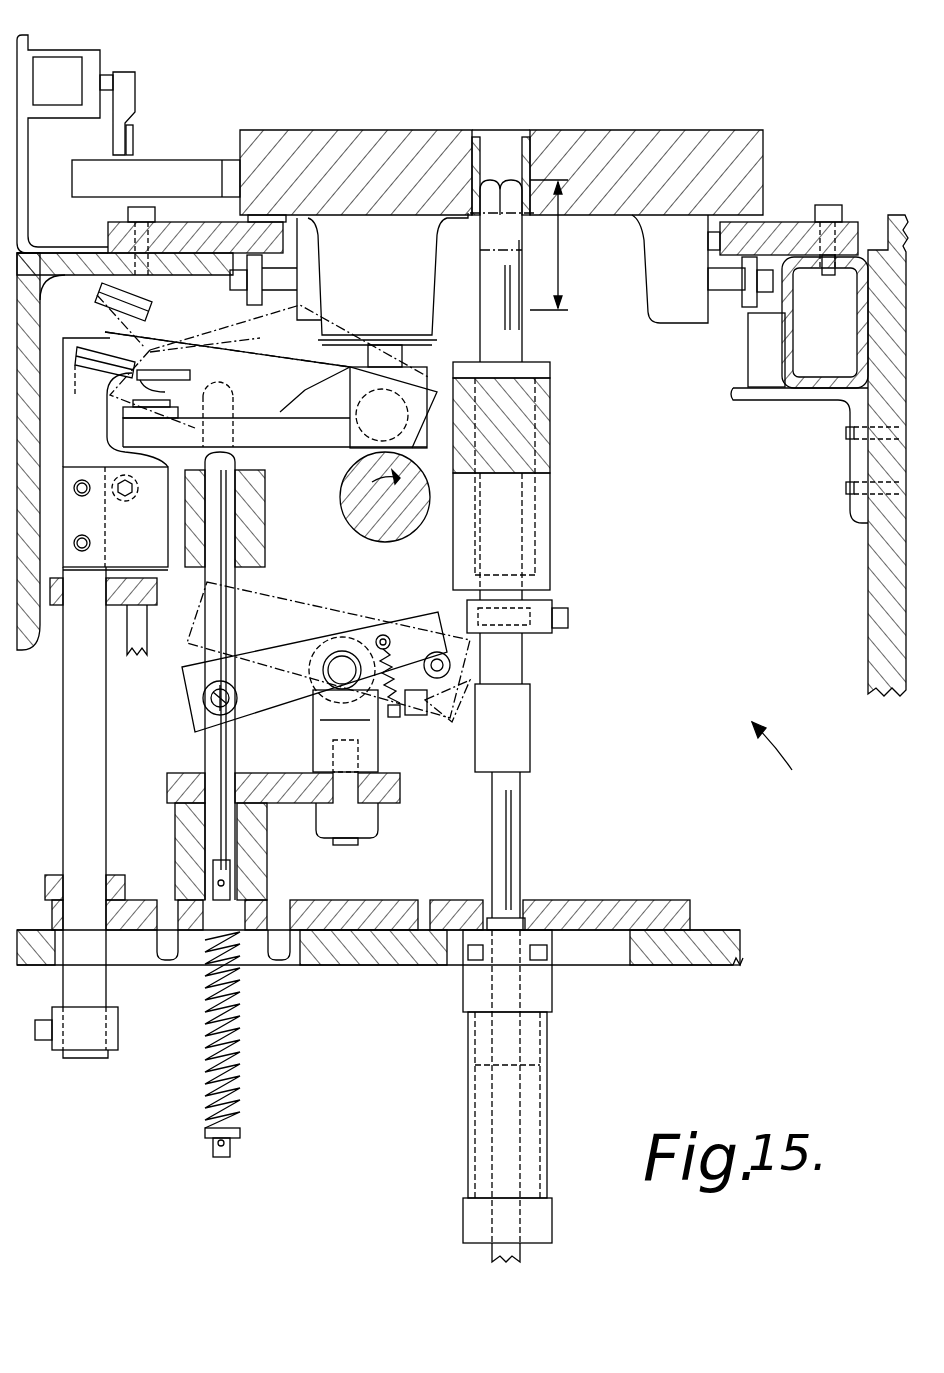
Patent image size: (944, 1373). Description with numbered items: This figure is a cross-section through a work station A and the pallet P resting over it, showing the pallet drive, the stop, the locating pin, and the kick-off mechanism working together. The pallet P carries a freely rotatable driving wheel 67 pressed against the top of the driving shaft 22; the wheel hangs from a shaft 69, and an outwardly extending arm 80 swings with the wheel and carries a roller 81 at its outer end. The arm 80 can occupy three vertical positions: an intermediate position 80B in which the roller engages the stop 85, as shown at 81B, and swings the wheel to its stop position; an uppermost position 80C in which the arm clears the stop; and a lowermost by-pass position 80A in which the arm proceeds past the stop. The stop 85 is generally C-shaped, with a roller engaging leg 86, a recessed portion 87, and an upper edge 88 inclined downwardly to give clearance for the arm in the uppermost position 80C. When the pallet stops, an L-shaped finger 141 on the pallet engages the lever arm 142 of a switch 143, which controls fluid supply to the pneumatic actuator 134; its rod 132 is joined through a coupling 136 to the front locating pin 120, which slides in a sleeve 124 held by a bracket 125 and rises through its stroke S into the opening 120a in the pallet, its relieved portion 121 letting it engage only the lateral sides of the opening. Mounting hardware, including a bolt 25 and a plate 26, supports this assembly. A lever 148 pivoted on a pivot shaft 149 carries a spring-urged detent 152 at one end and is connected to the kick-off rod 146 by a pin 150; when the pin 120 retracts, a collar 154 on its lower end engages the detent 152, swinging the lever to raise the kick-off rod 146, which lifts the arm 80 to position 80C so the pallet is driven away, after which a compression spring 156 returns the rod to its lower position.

The switch 143 is at (74, 50).
The lever arm 142 is at (124, 108).
The L-shaped finger 141 is at (176, 160).
The front locating pin 120 is at (498, 180).
The opening 120a is at (518, 145).
The relieved portion 121 is at (488, 225).
The pallet P is at (603, 118).
The mounting plate 26 is at (795, 222).
The bolt 25 is at (232, 268).
The stroke S is at (549, 245).
The shaft 69 is at (410, 362).
The stop 85 is at (80, 338).
The uppermost position 80C is at (97, 302).
The upper edge 88 is at (143, 350).
The intermediate position 80B is at (100, 386).
The roller engaging leg 86 is at (162, 392).
The roller engagement position 81B is at (205, 360).
The lowermost position 80A is at (112, 440).
The roller 81 is at (148, 420).
The arm 80 is at (288, 453).
The kick-off rod 146 is at (245, 426).
The driving wheel 67 is at (400, 456).
The driving shaft 22 is at (384, 542).
The recessed portion 87 is at (109, 561).
The compression spring 156 is at (240, 1030).
The lever 148 is at (285, 612).
The pin 150 is at (205, 702).
The pivot shaft 149 is at (333, 670).
The detent 152 is at (460, 665).
The bracket 125 is at (552, 428).
The sleeve 124 is at (552, 508).
The collar 154 is at (555, 603).
The coupling 136 is at (531, 724).
The rod 132 is at (513, 846).
The pneumatic actuator 134 is at (550, 1088).
The work station A is at (777, 754).